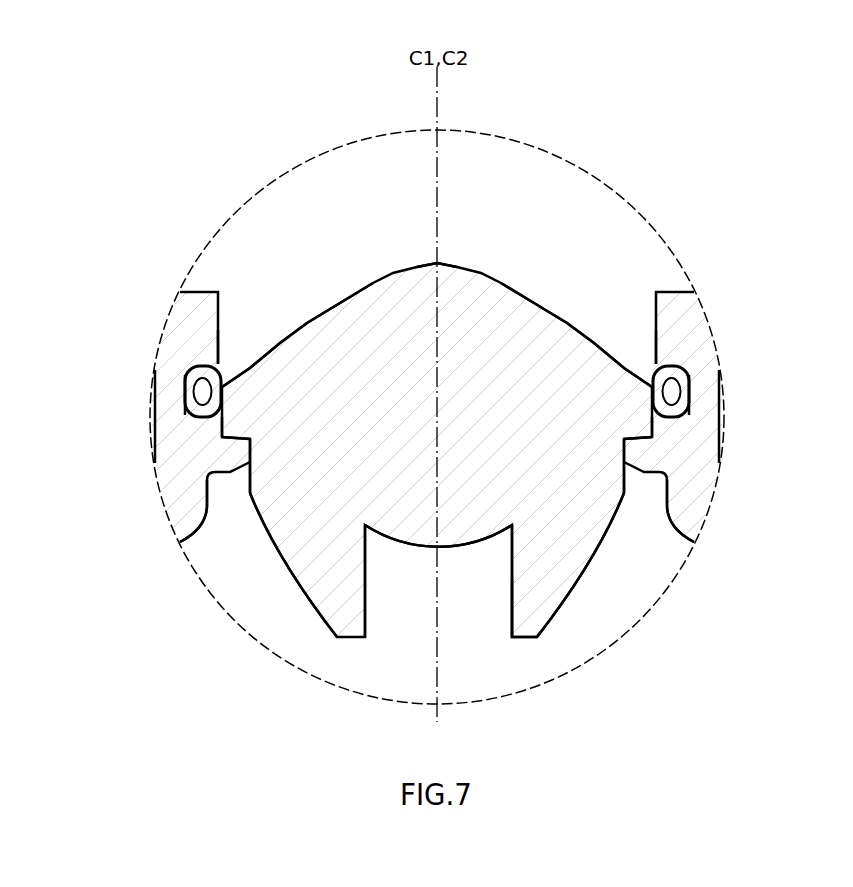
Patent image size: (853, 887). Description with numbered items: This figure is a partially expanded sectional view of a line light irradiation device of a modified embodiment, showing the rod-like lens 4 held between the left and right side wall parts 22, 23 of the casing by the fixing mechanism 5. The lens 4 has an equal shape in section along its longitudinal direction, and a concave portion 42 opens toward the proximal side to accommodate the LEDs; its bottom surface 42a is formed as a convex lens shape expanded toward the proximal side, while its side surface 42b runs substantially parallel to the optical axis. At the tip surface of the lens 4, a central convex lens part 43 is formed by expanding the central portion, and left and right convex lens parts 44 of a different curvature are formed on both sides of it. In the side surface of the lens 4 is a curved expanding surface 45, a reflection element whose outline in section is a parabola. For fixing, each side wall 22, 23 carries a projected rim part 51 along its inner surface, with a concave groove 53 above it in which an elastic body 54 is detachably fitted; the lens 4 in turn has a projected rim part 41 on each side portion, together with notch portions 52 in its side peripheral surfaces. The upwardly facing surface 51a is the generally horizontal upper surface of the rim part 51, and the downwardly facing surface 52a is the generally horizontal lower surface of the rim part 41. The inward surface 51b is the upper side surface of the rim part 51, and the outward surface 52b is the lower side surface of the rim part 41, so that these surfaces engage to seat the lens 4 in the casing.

The rod-like lens 4 is at (492, 277).
The fixing mechanism 5 is at (188, 336).
The left side wall part 22 is at (185, 387).
The right side wall part 23 is at (689, 387).
The projected rim part 41 is at (185, 408).
The concave portion 42 is at (415, 597).
The bottom surface 42a is at (453, 547).
The side surface 42b is at (510, 618).
The central convex lens part 43 is at (437, 262).
The left and right convex lens part 44 is at (330, 312).
The curved expanding surface 45 is at (302, 598).
The projected rim part 51 is at (207, 487).
The upwardly facing surface 51a is at (221, 430).
The inward surface 51b is at (252, 455).
The notch portion 52 is at (215, 482).
The downwardly facing surface 52a is at (250, 440).
The outward surface 52b is at (248, 482).
The concave groove 53 is at (184, 381).
The elastic body 54 is at (222, 373).